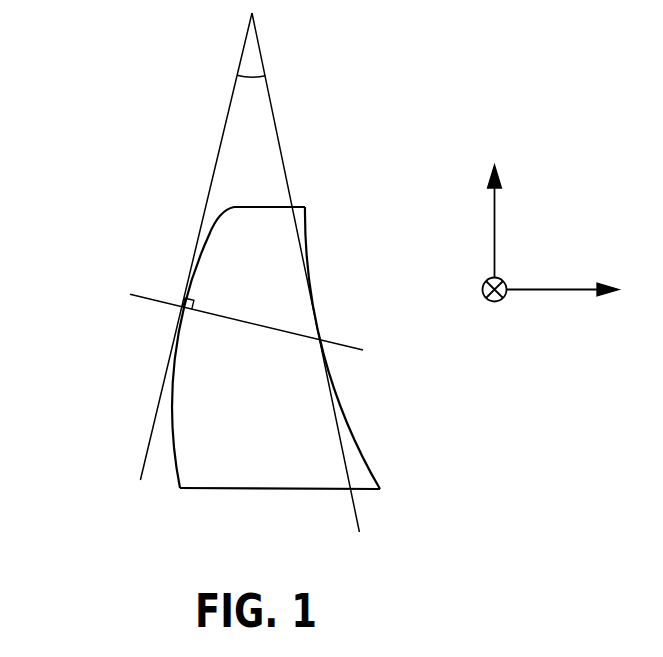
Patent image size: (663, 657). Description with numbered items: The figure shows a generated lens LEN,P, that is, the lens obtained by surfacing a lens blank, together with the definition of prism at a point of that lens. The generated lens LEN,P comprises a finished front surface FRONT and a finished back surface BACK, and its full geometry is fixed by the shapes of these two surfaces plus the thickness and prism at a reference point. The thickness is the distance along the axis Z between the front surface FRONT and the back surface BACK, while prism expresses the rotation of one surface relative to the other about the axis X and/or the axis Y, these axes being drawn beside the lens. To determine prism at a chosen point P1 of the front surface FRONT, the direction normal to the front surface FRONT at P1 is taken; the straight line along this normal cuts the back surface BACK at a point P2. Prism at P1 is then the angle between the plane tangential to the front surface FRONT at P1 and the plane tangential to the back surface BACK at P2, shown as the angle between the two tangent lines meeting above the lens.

The generated lens LEN,P is at (192, 490).
The finished front surface FRONT is at (173, 447).
The finished back surface BACK is at (353, 442).
The point of the front surface P1 is at (183, 307).
The point of the back surface P2 is at (321, 340).
The axis X is at (495, 308).
The axis Y is at (505, 218).
The axis Z is at (563, 307).